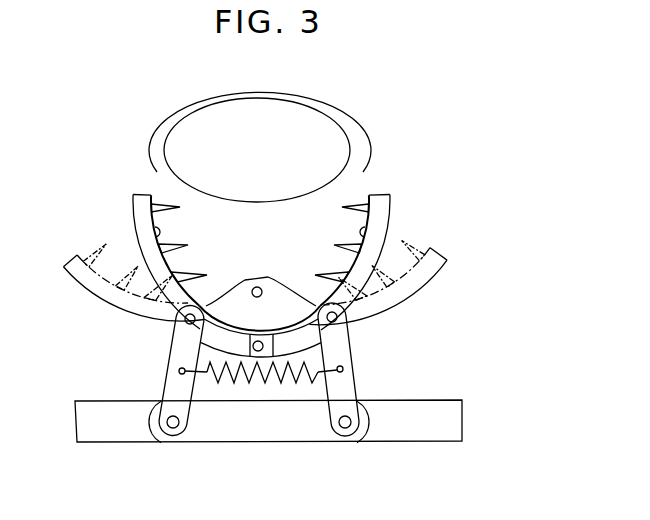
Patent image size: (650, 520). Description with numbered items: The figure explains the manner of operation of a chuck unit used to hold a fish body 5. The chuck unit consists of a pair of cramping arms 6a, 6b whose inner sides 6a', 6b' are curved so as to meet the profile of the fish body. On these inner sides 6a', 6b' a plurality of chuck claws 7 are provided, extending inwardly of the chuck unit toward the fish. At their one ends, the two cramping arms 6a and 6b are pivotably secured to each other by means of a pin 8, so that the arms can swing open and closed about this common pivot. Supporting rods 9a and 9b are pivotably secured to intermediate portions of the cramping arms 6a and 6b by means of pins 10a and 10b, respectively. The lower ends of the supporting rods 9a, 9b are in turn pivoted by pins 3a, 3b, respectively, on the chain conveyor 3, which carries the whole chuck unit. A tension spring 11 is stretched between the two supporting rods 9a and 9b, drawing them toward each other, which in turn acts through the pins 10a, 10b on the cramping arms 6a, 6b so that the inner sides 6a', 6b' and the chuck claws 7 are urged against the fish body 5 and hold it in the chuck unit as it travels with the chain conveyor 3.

The chain conveyor 3 is at (304, 432).
The pin 3a is at (172, 428).
The pin 3b is at (346, 428).
The tree trunk 5 is at (390, 180).
The cramping arm 6a is at (136, 243).
The cramping arm 6b is at (390, 254).
The inner side of cramping arm 6a' is at (136, 287).
The inner side of cramping arm 6b' is at (398, 289).
The chuck claws 7 is at (159, 196).
The pin 8 is at (262, 342).
The supporting rod 9a is at (173, 388).
The supporting rod 9b is at (346, 386).
The pin 10a is at (182, 317).
The pin 10b is at (340, 315).
The tension spring 11 is at (246, 385).